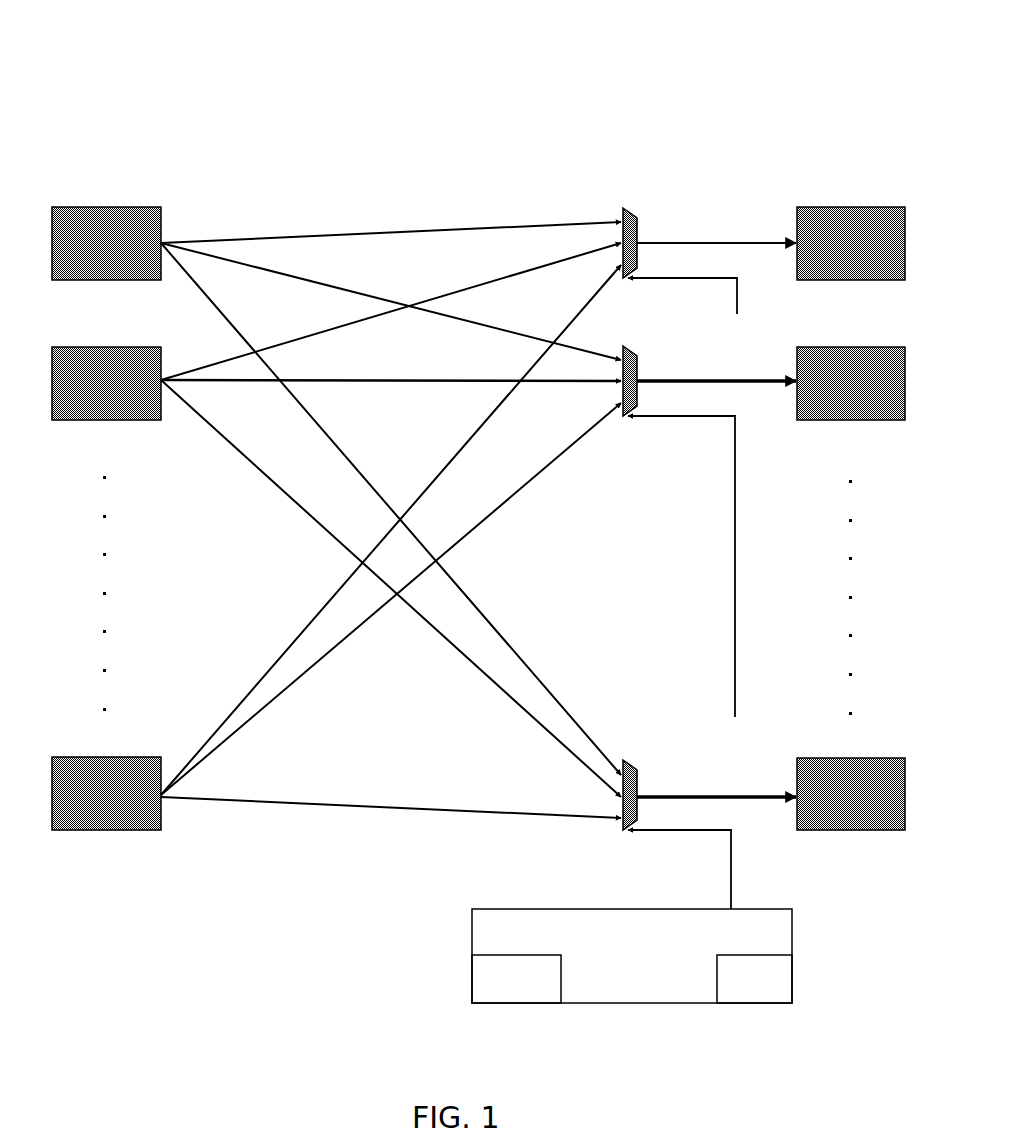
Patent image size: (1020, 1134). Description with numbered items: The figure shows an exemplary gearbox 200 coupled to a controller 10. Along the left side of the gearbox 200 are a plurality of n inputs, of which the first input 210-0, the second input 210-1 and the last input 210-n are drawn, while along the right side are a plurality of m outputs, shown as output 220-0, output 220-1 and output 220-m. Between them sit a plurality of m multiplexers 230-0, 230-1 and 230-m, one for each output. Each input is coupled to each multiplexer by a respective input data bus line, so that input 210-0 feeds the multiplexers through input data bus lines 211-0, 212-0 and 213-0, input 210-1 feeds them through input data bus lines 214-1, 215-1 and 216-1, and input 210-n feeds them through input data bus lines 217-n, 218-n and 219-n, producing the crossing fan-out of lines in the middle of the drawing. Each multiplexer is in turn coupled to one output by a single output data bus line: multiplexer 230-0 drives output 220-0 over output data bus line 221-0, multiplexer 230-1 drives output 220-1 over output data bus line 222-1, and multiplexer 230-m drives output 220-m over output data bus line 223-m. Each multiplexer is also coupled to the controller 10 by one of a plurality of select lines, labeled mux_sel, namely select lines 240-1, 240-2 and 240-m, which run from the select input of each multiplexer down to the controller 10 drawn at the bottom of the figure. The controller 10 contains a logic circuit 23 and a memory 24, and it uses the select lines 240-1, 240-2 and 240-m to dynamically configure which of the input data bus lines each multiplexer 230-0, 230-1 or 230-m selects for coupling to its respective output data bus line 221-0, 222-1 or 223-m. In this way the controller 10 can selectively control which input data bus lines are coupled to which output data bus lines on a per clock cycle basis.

The gearbox 200 is at (478, 504).
The input 210-0 is at (106, 243).
The input 210-1 is at (106, 383).
The input 210-n is at (106, 793).
The output 220-0 is at (851, 243).
The output 220-1 is at (851, 383).
The output 220-m is at (851, 794).
The input data bus line 211-0 is at (292, 237).
The input data bus line 212-0 is at (343, 293).
The input data bus line 213-0 is at (260, 315).
The input data bus line 214-1 is at (328, 330).
The input data bus line 215-1 is at (388, 382).
The input data bus line 216-1 is at (270, 477).
The input data bus line 217-n is at (262, 672).
The input data bus line 218-n is at (300, 673).
The input data bus line 219-n is at (318, 800).
The multiplexer 230-0 is at (637, 220).
The multiplexer 230-1 is at (637, 366).
The multiplexer 230-m is at (637, 773).
The output data bus line 221-0 is at (753, 240).
The output data bus line 222-1 is at (763, 386).
The output data bus line 223-m is at (753, 792).
The select line 240-1 is at (739, 298).
The select line 240-2 is at (737, 592).
The select line 240-m is at (733, 886).
The controller 10 is at (646, 966).
The logic circuit 23 is at (528, 991).
The memory 24 is at (767, 991).